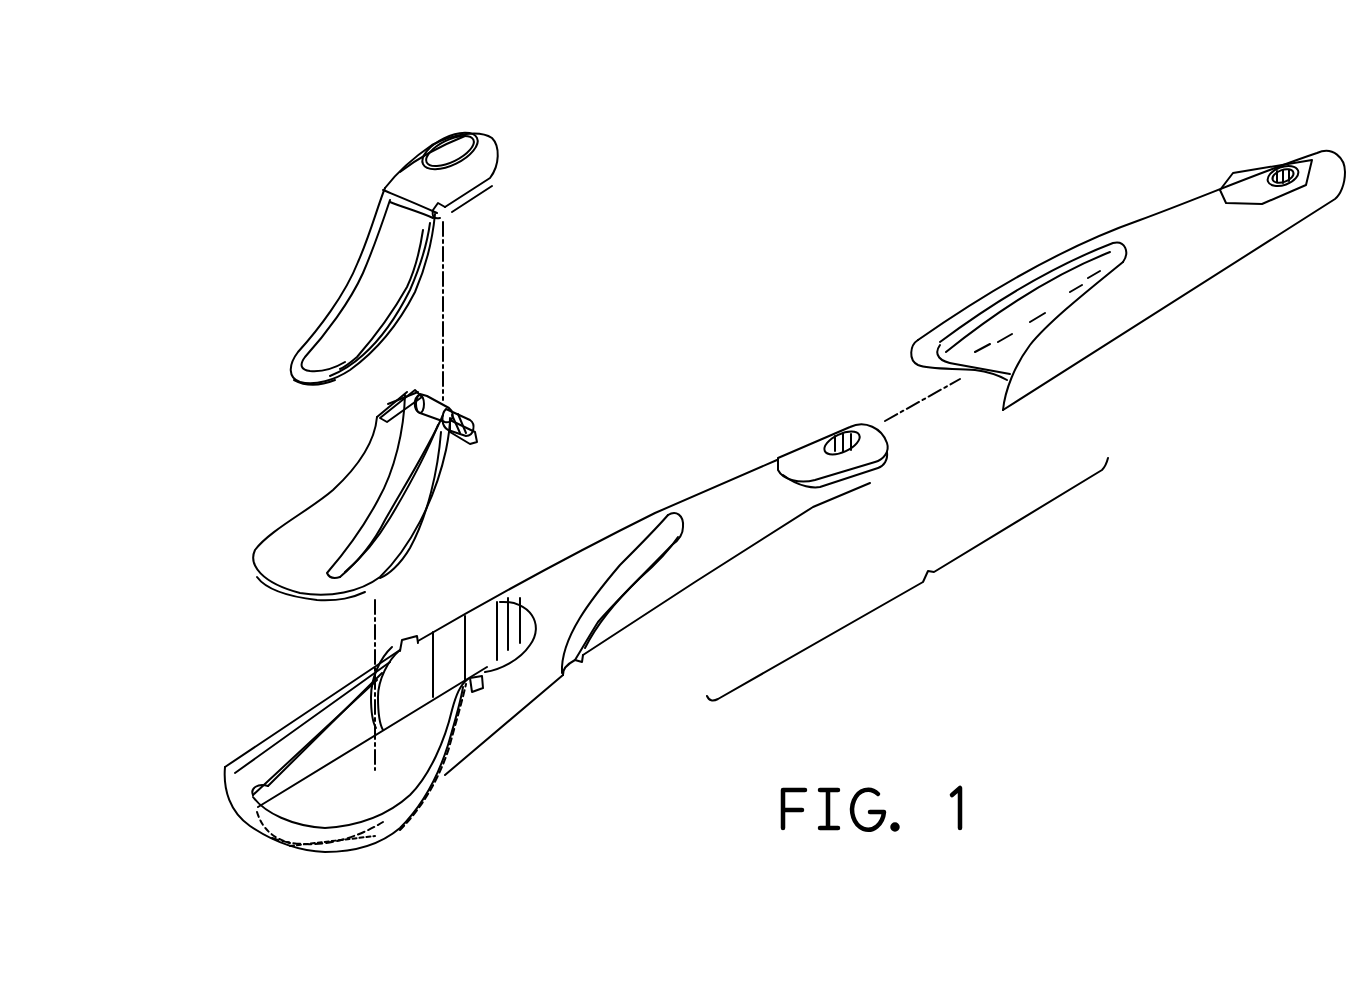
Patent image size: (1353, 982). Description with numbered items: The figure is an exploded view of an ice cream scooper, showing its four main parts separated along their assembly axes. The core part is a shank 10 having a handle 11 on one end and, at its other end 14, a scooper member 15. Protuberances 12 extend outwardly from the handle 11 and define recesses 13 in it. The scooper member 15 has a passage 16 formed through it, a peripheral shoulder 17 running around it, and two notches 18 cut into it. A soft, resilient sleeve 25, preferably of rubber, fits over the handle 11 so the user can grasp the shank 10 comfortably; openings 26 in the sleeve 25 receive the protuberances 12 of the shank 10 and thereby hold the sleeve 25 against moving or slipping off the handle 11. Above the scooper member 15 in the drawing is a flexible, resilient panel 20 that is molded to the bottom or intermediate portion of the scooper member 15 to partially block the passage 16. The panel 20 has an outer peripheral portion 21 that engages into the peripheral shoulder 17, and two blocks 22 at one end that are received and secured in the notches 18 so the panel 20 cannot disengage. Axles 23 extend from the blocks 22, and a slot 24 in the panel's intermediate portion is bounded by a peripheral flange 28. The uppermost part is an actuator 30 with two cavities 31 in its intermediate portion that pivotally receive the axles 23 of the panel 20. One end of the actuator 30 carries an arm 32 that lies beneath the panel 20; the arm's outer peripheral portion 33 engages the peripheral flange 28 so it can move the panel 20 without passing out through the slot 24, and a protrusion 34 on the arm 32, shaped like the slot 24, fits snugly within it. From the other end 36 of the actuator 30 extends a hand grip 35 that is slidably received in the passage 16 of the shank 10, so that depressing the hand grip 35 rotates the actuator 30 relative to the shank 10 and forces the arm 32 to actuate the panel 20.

The shank 10 is at (568, 677).
The handle 11 is at (770, 523).
The protuberance 12 is at (647, 530).
The recess 13 is at (790, 488).
The other end 14 is at (433, 810).
The scooper member 15 is at (240, 750).
The passage 16 is at (347, 783).
The peripheral shoulder 17 is at (292, 763).
The notch 18 is at (401, 648).
The panel 20 is at (280, 518).
The outer peripheral portion 21 is at (258, 558).
The block 22 is at (403, 398).
The axle 23 is at (427, 398).
The slot 24 is at (387, 520).
The sleeve 25 is at (1110, 237).
The opening 26 is at (1055, 280).
The peripheral flange 28 is at (390, 545).
The actuator 30 is at (385, 190).
The cavity 31 is at (440, 220).
The arm 32 is at (313, 333).
The outer peripheral portion 33 is at (287, 365).
The protrusion 34 is at (370, 277).
The hand grip 35 is at (442, 150).
The other end 36 is at (475, 137).